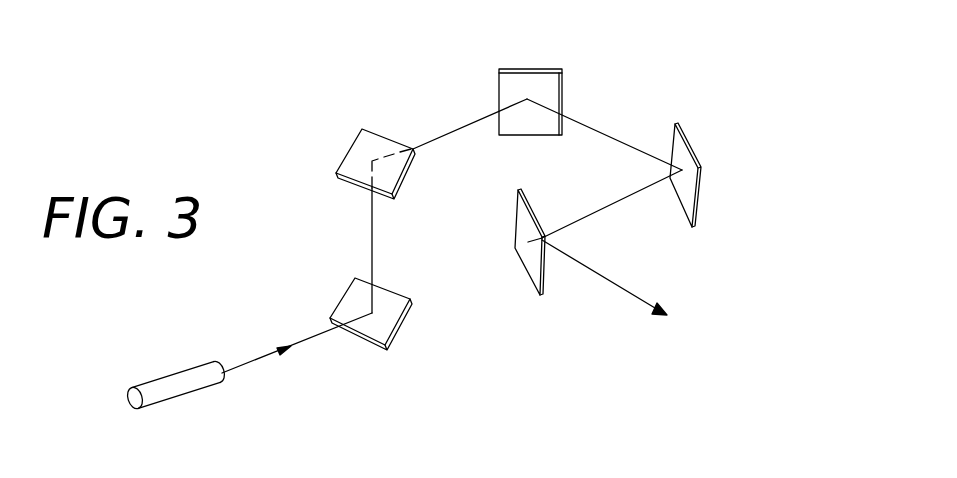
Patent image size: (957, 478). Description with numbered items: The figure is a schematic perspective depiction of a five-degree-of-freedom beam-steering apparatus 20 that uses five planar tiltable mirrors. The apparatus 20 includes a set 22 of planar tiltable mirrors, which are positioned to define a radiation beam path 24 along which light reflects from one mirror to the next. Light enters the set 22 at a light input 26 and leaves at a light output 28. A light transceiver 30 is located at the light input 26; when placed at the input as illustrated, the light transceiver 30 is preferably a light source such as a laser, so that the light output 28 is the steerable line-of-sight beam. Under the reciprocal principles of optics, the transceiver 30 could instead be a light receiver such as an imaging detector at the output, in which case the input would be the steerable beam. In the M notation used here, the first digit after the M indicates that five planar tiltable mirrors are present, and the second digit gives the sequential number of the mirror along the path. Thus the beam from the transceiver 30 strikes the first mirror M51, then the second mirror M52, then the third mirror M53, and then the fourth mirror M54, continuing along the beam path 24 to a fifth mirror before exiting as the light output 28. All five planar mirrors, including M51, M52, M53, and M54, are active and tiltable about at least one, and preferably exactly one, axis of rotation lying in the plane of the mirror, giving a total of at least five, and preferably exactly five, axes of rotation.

The beam-steering apparatus 20 is at (436, 77).
The set of planar tiltable mirrors 22 is at (668, 195).
The light beam path 24 is at (451, 132).
The light input 26 is at (252, 357).
The light output 28 is at (605, 286).
The light transceiver 30 is at (168, 397).
The first planar tiltable mirror M51 is at (371, 286).
The second planar tiltable mirror M52 is at (375, 146).
The third planar tiltable mirror M53 is at (585, 97).
The fourth planar tiltable mirror M54 is at (636, 195).